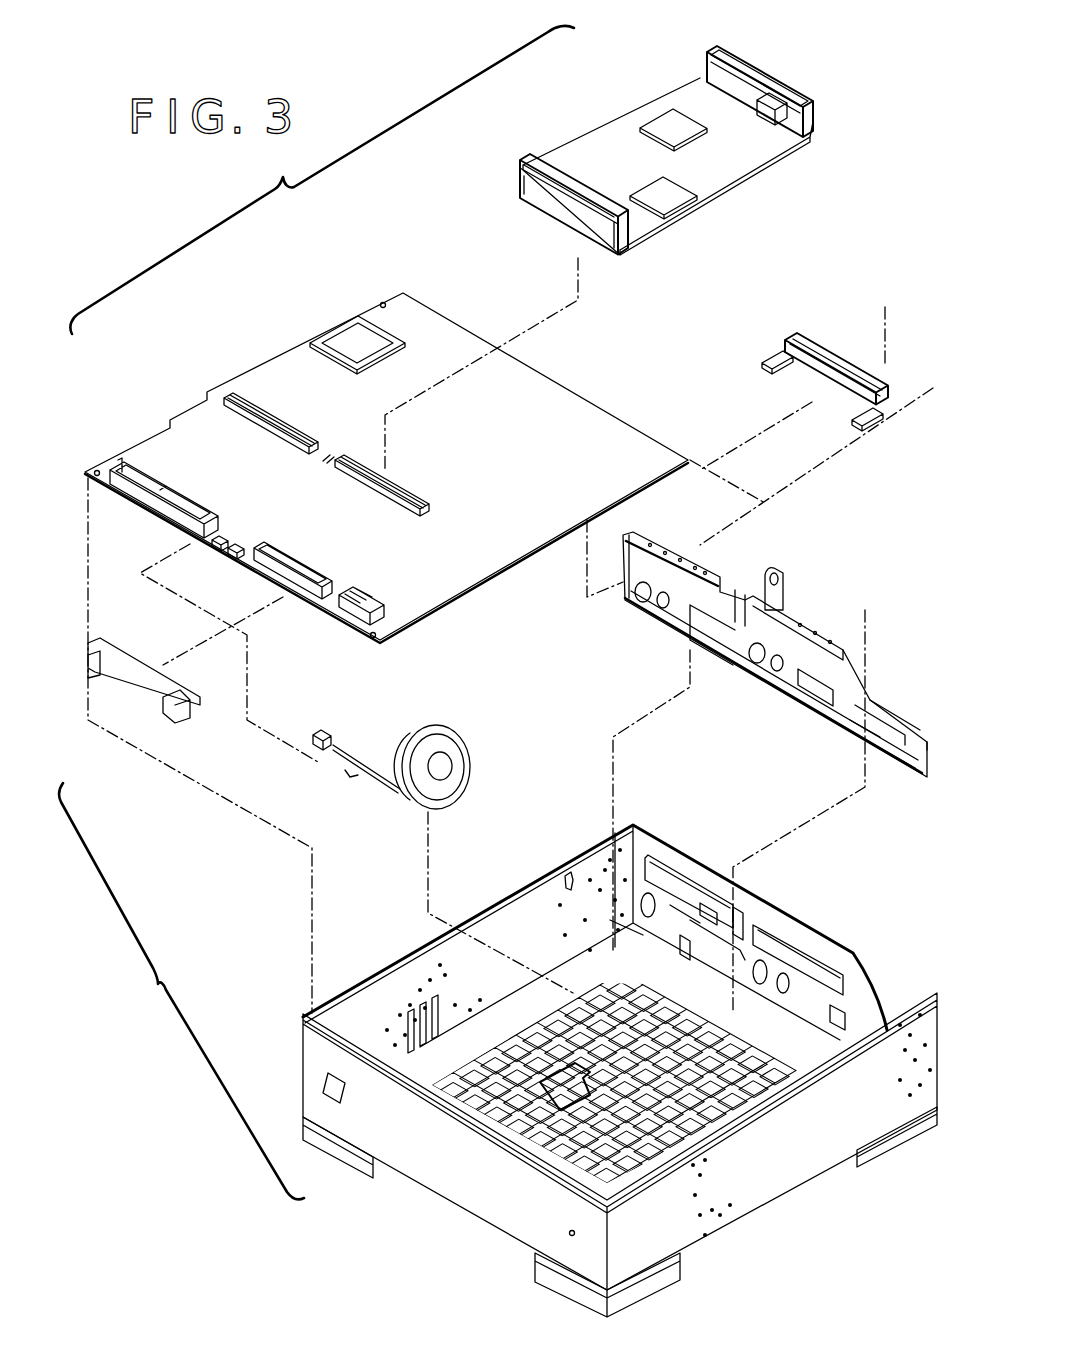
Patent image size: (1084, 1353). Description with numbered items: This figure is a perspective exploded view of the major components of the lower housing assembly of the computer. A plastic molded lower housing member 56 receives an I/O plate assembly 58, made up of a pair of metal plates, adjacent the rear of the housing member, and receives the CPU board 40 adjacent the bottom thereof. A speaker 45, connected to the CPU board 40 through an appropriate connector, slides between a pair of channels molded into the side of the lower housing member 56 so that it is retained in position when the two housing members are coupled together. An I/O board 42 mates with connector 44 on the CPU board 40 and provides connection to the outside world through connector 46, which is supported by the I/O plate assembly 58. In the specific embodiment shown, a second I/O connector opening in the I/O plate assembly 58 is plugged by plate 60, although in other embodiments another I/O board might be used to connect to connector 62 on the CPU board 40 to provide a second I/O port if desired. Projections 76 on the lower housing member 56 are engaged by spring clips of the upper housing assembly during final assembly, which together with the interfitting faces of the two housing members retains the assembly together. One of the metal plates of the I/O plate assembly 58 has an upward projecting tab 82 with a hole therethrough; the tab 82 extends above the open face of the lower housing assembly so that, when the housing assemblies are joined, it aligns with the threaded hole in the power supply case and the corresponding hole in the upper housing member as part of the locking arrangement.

The CPU board 40 is at (405, 296).
The I/O board 42 is at (598, 150).
The connector 44 is at (420, 496).
The speaker 45 is at (443, 726).
The connector 46 is at (752, 98).
The lower housing member 56 is at (452, 1188).
The I/O plate assembly 58 is at (848, 680).
The plate 60 is at (825, 360).
The connector 62 is at (248, 393).
The projections 76 is at (568, 878).
The tab 82 is at (786, 583).